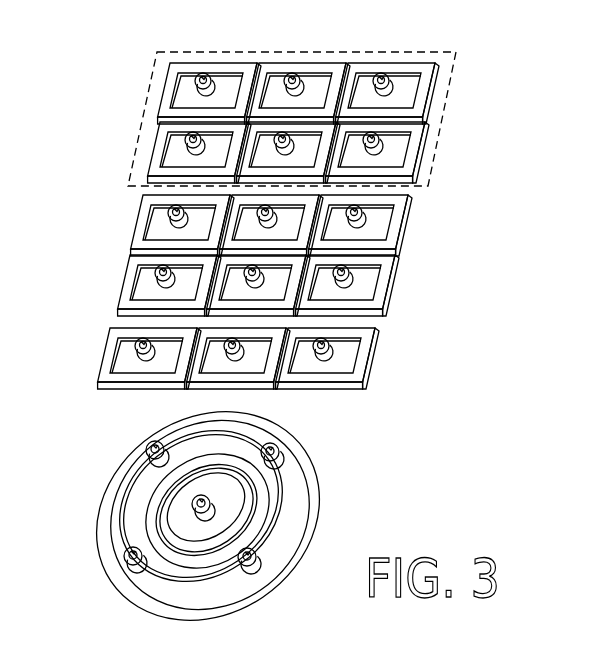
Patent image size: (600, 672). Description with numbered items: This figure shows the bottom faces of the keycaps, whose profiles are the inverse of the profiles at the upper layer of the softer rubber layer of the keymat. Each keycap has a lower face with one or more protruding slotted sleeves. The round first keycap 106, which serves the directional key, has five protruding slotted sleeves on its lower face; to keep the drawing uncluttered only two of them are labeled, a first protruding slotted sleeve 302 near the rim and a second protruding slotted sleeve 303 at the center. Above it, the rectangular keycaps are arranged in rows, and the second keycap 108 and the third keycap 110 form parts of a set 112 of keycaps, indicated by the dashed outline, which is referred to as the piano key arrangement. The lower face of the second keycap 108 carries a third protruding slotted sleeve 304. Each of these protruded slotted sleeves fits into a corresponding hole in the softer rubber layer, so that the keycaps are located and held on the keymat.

The first keycap 106 is at (187, 515).
The second keycap 108 is at (376, 97).
The third keycap 110 is at (407, 95).
The set of keycaps 112 is at (281, 98).
The first protruding slotted sleeve 302 is at (148, 450).
The second protruding slotted sleeve 303 is at (194, 503).
The third protruding slotted sleeve 304 is at (281, 132).